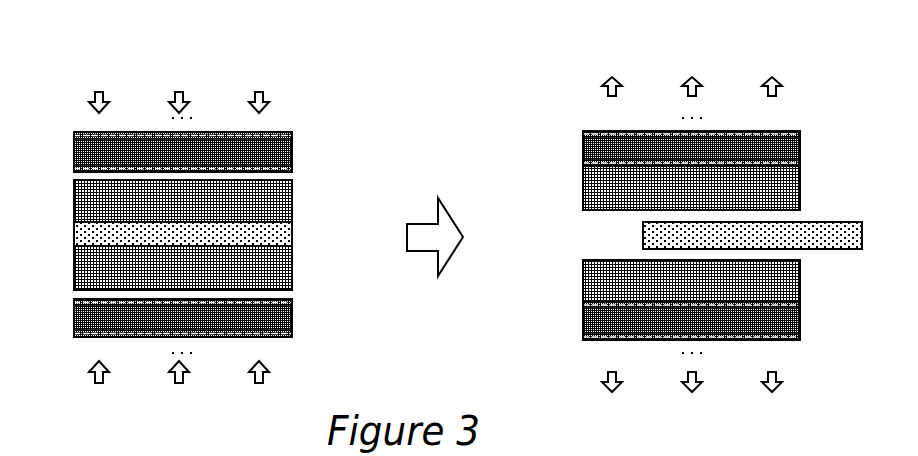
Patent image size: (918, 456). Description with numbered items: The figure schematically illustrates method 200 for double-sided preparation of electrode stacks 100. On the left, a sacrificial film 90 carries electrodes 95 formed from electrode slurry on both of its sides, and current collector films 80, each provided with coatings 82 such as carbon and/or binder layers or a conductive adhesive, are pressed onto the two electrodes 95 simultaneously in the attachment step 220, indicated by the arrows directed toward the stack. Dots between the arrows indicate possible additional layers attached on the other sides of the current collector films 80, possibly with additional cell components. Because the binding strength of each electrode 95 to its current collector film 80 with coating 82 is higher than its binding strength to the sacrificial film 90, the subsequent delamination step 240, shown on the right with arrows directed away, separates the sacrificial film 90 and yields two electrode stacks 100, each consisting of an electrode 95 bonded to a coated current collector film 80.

The method 200 is at (102, 36).
The current collector film 80 is at (292, 155).
The coating 82 is at (74, 133).
The electrode 95 is at (292, 205).
The sacrificial film 90 is at (74, 229).
The electrode stack 100 is at (590, 122).
The attachment 220 is at (90, 380).
The delamination 240 is at (604, 384).